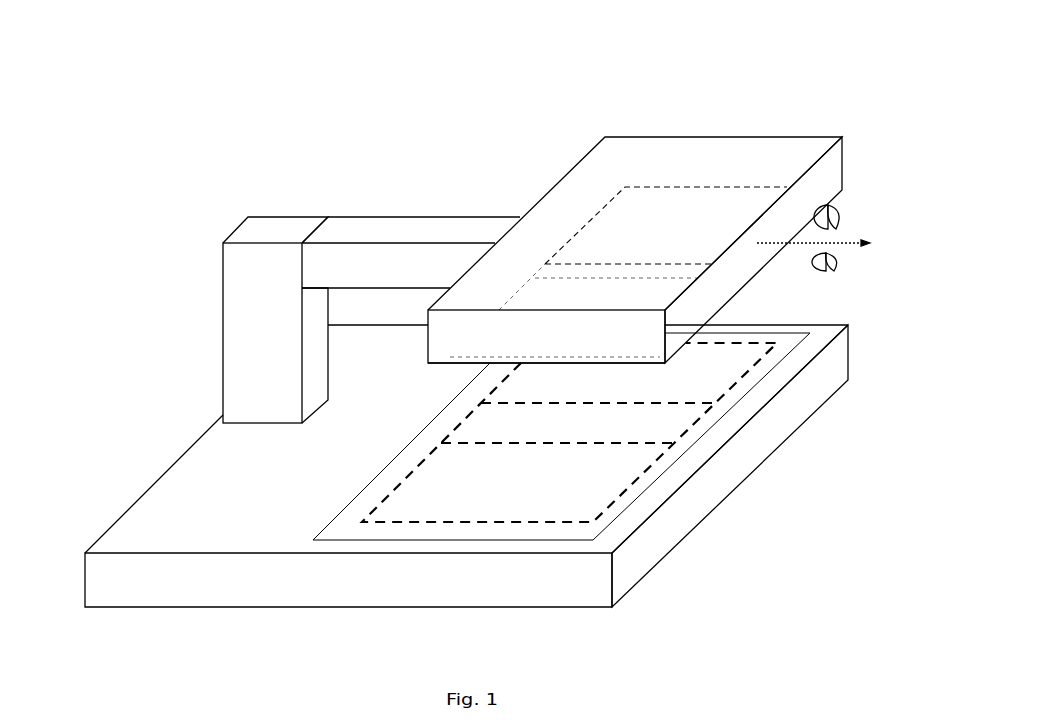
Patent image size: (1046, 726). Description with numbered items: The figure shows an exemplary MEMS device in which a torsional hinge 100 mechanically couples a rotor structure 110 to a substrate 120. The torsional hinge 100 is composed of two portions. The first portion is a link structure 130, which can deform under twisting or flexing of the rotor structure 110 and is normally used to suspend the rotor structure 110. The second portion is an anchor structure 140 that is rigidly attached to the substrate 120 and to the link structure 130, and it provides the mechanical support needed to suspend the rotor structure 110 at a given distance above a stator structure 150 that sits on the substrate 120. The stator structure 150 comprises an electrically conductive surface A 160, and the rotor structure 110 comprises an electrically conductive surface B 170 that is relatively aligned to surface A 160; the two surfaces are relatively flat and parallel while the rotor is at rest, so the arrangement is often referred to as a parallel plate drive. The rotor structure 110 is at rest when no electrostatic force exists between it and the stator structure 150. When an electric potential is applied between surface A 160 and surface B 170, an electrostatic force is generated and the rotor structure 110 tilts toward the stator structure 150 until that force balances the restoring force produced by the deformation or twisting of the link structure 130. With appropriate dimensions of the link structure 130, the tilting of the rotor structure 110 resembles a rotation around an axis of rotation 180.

The torsional hinge 100 is at (490, 218).
The rotor structure 110 is at (698, 92).
The substrate 120 is at (318, 585).
The link structure 130 is at (424, 222).
The anchor structure 140 is at (267, 221).
The stator structure 150 is at (681, 468).
The surface A 160 is at (456, 463).
The surface B 170 is at (524, 373).
The axis of rotation 180 is at (793, 234).